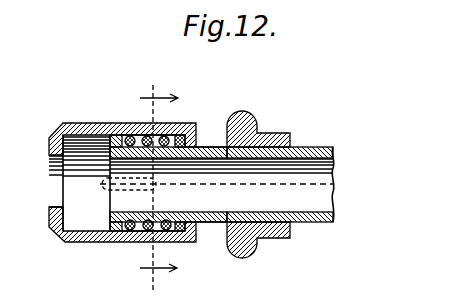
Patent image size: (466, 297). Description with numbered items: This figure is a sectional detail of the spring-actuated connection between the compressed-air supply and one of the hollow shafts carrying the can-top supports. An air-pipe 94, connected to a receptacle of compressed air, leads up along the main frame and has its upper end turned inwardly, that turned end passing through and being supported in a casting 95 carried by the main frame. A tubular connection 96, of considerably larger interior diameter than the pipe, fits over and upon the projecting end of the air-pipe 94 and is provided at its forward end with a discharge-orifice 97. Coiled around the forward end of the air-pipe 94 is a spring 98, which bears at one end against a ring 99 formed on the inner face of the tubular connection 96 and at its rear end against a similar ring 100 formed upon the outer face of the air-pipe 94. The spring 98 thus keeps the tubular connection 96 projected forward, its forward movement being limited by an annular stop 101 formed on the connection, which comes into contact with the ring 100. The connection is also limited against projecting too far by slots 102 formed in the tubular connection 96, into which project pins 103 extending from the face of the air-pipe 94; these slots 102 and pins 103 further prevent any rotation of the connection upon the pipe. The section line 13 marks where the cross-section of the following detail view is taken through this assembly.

The section line 13- 13 is at (159, 180).
The air-pipe 94 is at (332, 182).
The casting 95 is at (258, 122).
The tubular connection 96 is at (82, 128).
The discharge-orifice 97 is at (50, 161).
The spring 98 is at (152, 133).
The ring 99 is at (118, 140).
The ring 100 is at (197, 128).
The annular stop 101 is at (198, 234).
The slots 102 is at (113, 186).
The pins 103 is at (292, 193).